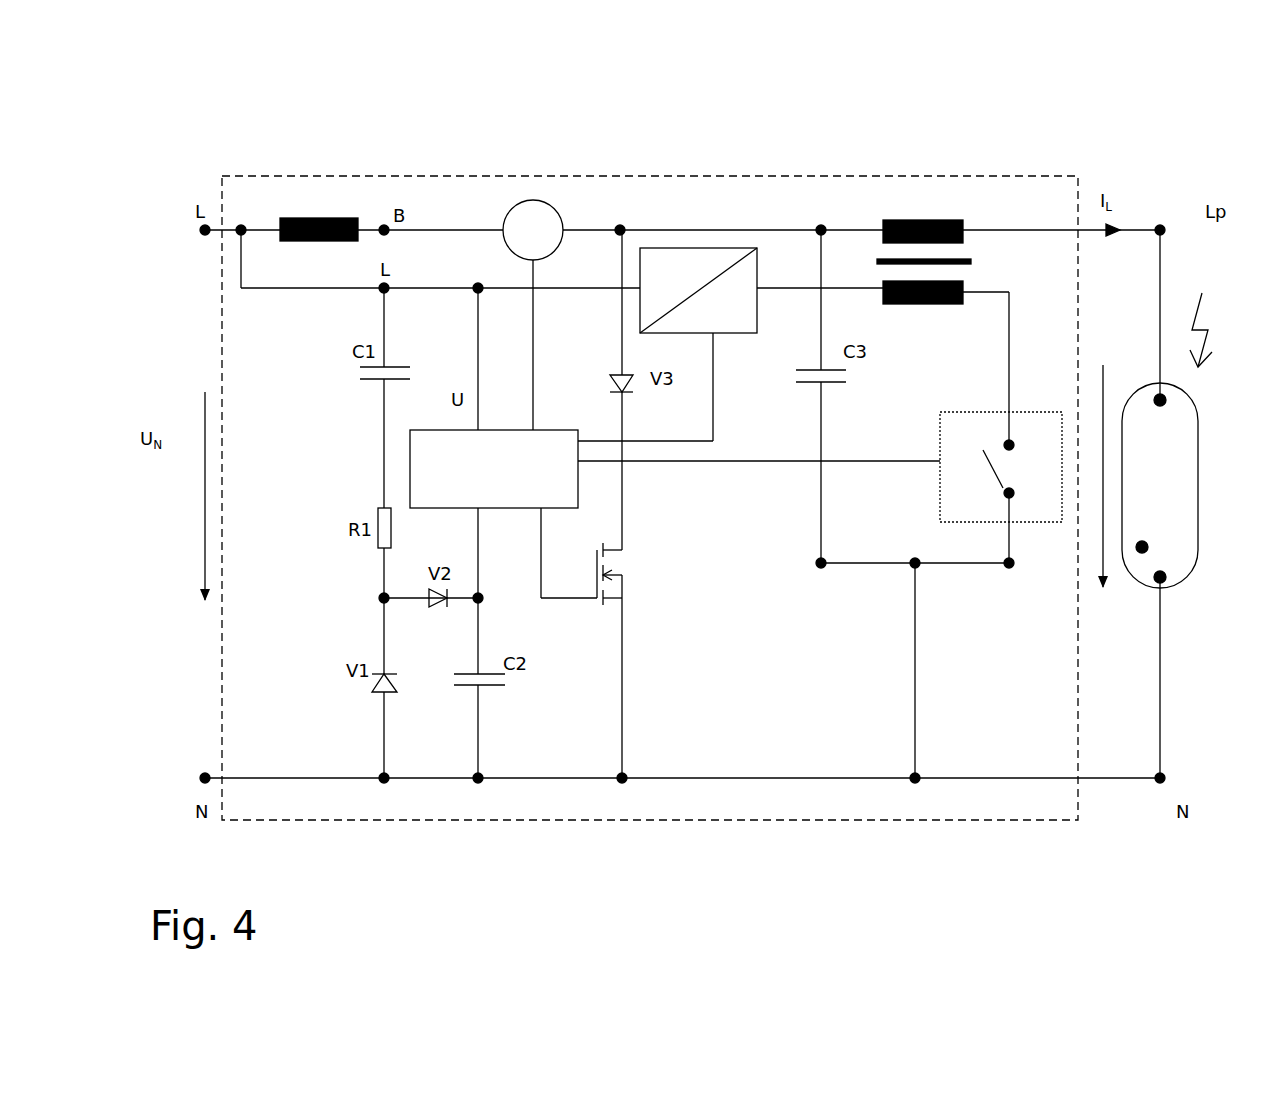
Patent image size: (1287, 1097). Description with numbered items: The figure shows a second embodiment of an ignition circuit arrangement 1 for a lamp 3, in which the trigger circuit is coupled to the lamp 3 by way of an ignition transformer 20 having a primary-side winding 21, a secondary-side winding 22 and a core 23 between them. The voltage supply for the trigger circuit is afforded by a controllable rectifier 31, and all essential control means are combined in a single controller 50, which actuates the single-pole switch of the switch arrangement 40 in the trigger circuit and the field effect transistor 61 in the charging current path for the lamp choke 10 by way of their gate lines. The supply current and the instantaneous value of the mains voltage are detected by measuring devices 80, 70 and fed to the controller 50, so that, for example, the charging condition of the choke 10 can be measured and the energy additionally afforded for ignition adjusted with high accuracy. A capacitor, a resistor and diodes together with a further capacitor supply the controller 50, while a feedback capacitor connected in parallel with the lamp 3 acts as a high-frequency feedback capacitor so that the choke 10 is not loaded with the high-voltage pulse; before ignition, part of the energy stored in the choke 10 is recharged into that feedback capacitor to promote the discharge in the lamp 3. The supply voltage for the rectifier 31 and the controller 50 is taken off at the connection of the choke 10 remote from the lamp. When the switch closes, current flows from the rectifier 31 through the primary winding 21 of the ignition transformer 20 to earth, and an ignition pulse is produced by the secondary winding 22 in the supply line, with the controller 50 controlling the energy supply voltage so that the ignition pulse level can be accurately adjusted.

The electronic ballast 1 is at (943, 176).
The lamp 3 is at (1205, 482).
The lamp choke 10 is at (330, 218).
The ignition transformer 20 is at (950, 271).
The primary-side winding 21 is at (940, 310).
The secondary-side winding 22 is at (963, 220).
The transformer core 23 is at (984, 261).
The controllable rectifier 31 is at (690, 248).
The switch S1 40 is at (940, 503).
The controller 50 is at (494, 469).
The field effect transistor 61 is at (628, 593).
The measuring device 70 is at (478, 288).
The measuring device 80 is at (540, 200).